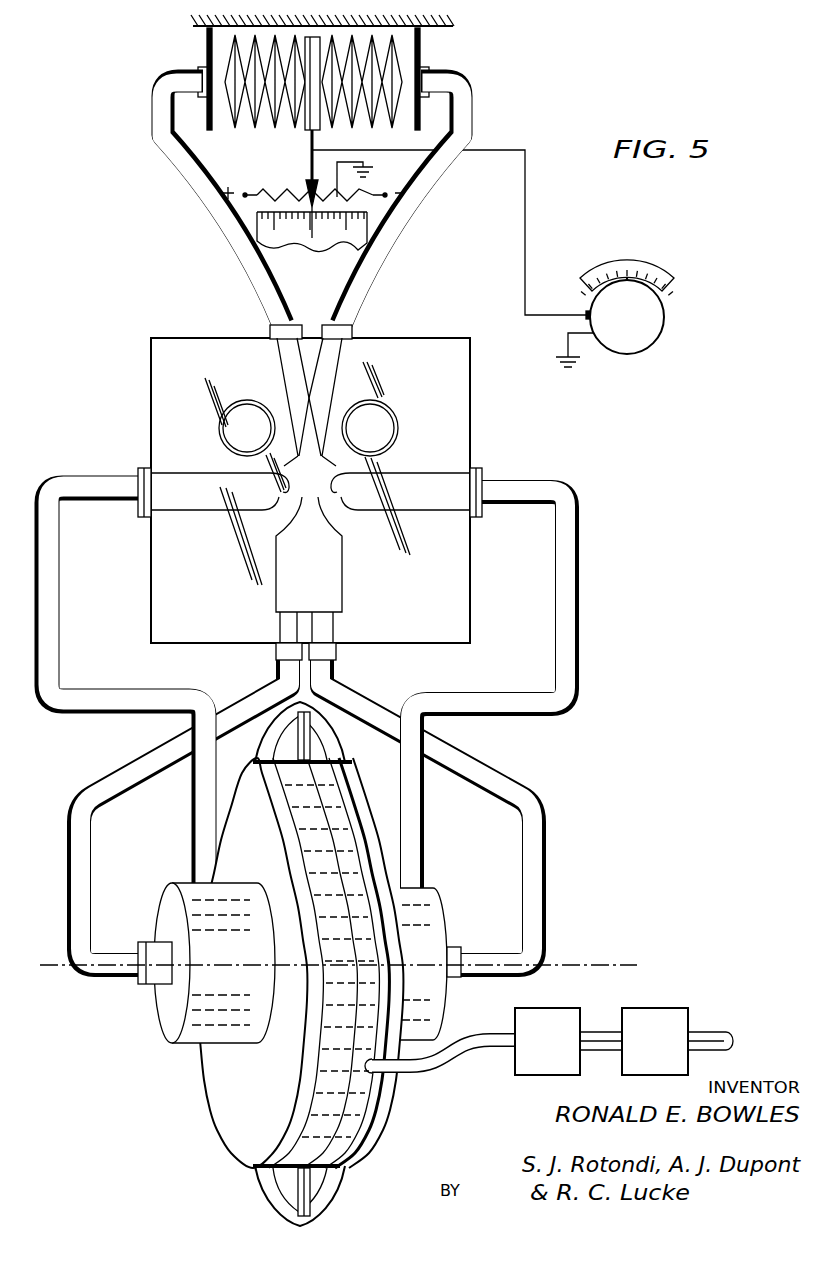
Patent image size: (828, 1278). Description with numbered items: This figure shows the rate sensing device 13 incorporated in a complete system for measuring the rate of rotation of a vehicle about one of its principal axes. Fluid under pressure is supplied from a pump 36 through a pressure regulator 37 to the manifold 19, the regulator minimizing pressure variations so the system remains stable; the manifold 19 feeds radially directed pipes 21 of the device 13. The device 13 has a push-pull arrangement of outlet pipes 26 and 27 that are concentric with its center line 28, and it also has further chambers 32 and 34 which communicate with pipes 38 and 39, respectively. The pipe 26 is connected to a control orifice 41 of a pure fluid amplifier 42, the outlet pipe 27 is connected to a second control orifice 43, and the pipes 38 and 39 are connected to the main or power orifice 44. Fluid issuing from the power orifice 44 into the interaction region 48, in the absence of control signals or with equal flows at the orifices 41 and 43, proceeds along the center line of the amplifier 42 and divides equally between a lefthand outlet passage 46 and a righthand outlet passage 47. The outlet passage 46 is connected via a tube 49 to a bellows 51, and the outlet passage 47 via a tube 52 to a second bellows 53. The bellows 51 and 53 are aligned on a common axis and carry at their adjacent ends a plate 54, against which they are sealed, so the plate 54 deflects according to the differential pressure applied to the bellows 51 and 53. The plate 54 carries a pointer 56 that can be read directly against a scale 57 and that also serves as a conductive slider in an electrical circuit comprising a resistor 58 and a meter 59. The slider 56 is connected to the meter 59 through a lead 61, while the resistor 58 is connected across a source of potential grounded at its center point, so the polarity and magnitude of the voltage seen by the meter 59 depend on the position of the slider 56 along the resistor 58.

The rate sensing device 13 is at (112, 1025).
The manifold 19 is at (343, 757).
The radially directed pipes 21 is at (300, 746).
The outlet pipe 26 is at (198, 816).
The outlet pipe 27 is at (418, 813).
The center line 28 is at (618, 966).
The further chamber 32 is at (165, 907).
The further chamber 34 is at (440, 933).
The pump 36 is at (652, 1012).
The pressure regulator 37 is at (558, 1012).
The pipe 38 is at (70, 845).
The pipe 39 is at (538, 820).
The control orifice 41 is at (277, 504).
The pure fluid amplifier 42 is at (502, 430).
The second control orifice 43 is at (356, 505).
The power orifice 44 is at (313, 504).
The lefthand outlet passage 46 is at (284, 361).
The righthand outlet passage 47 is at (336, 361).
The interaction region 48 is at (340, 457).
The tube 49 is at (208, 210).
The bellows 51 is at (237, 50).
The tube 52 is at (393, 253).
The second bellows 53 is at (400, 64).
The plate 54 is at (315, 46).
The pointer 56 is at (310, 172).
The scale 57 is at (296, 241).
The resistor 58 is at (287, 194).
The meter 59 is at (656, 324).
The lead 61 is at (527, 200).